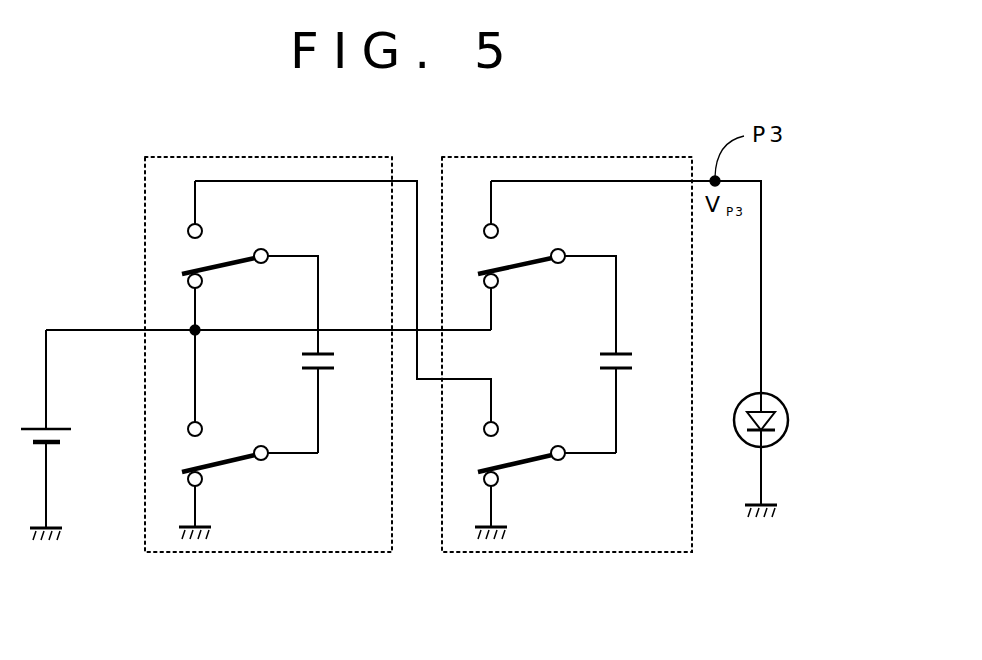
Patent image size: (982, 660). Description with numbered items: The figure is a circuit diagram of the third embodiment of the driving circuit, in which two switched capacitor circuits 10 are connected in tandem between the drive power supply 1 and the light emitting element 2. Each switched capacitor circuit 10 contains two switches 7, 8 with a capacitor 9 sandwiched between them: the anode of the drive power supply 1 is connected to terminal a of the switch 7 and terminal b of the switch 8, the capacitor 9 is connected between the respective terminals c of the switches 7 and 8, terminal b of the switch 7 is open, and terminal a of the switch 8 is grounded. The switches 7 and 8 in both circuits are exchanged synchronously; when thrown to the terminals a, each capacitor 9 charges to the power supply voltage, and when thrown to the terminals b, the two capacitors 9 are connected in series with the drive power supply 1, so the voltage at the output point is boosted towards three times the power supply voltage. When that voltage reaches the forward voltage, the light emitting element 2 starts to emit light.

The drive power supply 1 is at (55, 421).
The light emitting element 2 is at (788, 430).
The switch 7 is at (232, 239).
The switch 8 is at (227, 437).
The capacitor 9 is at (338, 360).
The switched capacitor circuit 10 is at (548, 156).